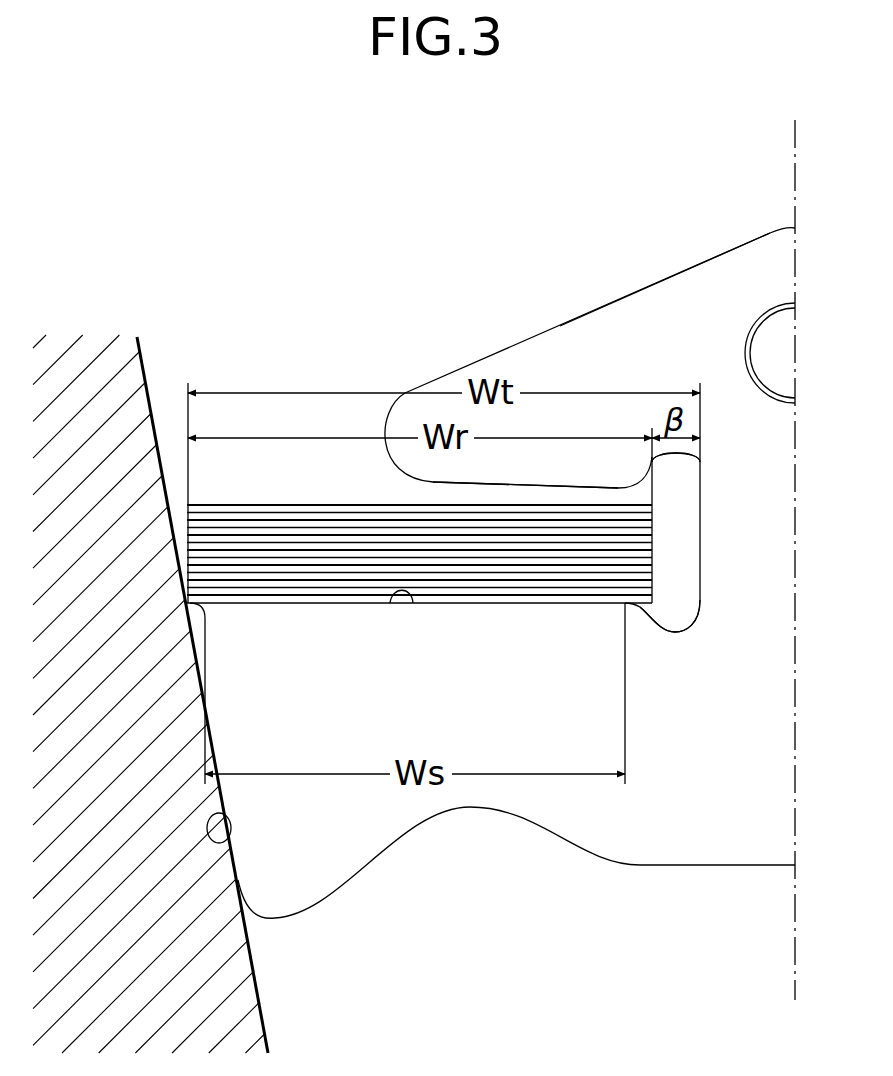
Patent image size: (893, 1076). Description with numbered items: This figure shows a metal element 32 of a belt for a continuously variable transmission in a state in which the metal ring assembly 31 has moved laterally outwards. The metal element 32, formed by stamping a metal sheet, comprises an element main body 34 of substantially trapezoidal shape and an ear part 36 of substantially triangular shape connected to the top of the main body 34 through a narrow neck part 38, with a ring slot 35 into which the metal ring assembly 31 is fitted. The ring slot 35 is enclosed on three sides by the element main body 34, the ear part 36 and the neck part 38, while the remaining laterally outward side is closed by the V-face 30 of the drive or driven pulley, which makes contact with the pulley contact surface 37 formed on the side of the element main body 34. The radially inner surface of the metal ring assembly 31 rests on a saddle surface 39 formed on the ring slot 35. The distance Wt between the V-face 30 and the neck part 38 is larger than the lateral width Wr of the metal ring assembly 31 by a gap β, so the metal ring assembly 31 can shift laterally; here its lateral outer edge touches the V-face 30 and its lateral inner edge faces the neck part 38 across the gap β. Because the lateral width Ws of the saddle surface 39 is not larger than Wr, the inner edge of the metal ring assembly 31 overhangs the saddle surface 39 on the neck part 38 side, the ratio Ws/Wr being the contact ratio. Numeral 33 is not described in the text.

The V-face 30 is at (143, 368).
The metal ring assembly 31 is at (362, 501).
The metal element 32 is at (604, 286).
The projections 33 is at (652, 587).
The element main body 34 is at (678, 850).
The ring slot 35 is at (497, 493).
The ear part 36 is at (695, 277).
The pulley contact surface 37 is at (230, 838).
The neck part 38 is at (785, 562).
The saddle surface 39 is at (413, 603).